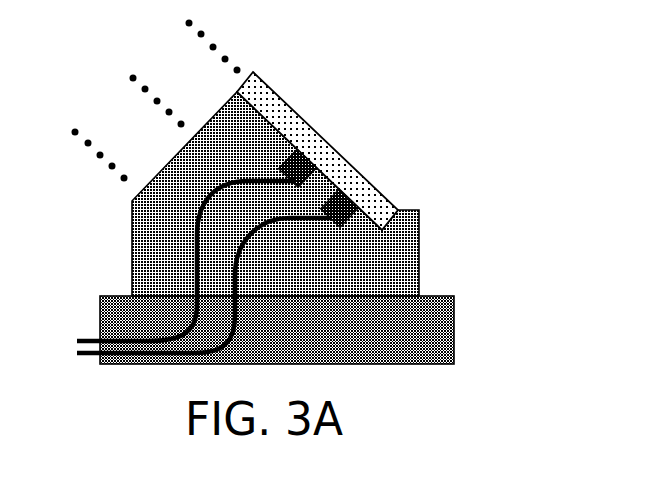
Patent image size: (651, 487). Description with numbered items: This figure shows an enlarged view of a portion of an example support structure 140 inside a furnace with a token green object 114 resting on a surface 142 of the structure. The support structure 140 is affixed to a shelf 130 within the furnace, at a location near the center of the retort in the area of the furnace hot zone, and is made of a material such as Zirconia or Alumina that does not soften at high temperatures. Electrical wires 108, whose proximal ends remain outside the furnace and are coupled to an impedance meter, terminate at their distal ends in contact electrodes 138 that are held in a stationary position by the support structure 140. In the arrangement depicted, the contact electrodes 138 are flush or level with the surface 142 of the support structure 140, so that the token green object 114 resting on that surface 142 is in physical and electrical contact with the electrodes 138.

The electrical wires 108 is at (87, 339).
The token green object 114 is at (287, 104).
The shelf 130 is at (445, 296).
The contact electrodes 138 is at (342, 232).
The support structure 140 is at (132, 270).
The surface 142 is at (277, 130).